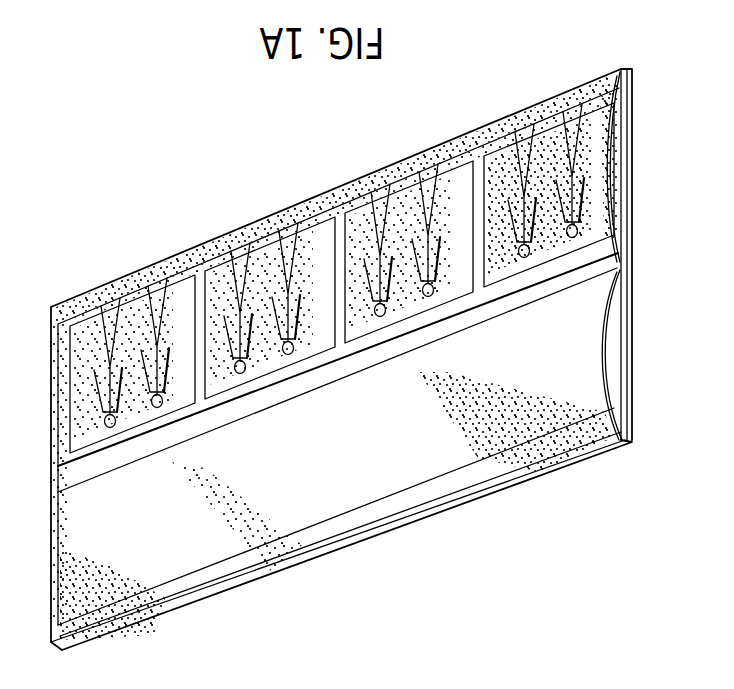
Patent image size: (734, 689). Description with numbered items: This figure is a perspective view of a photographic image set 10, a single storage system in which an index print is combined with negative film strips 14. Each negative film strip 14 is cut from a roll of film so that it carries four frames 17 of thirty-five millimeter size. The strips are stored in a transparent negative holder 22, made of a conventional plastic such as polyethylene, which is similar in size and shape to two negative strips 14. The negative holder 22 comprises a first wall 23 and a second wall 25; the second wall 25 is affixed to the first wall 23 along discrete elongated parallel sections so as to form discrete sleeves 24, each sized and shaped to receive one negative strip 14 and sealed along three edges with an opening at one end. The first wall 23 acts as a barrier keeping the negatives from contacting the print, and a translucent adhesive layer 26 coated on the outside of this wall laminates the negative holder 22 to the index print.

The photographic image set 10 is at (439, 588).
The negative film strip 14 is at (628, 135).
The frame 17 is at (112, 313).
The negative holder 22 is at (652, 353).
The first wall 23 is at (458, 503).
The sleeve 24 is at (629, 186).
The second wall 25 is at (637, 417).
The translucent adhesive layer 26 is at (574, 457).